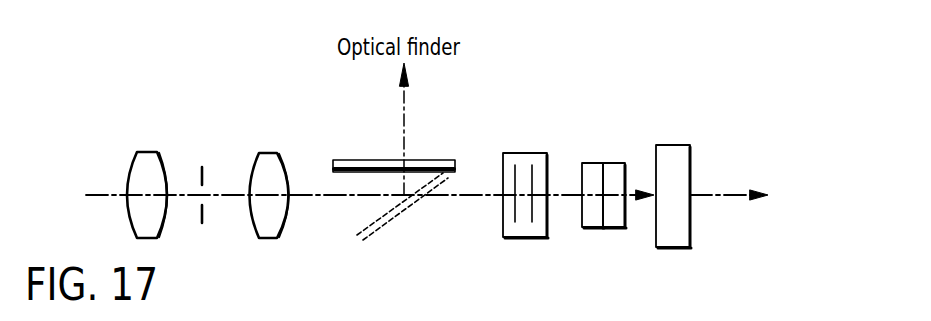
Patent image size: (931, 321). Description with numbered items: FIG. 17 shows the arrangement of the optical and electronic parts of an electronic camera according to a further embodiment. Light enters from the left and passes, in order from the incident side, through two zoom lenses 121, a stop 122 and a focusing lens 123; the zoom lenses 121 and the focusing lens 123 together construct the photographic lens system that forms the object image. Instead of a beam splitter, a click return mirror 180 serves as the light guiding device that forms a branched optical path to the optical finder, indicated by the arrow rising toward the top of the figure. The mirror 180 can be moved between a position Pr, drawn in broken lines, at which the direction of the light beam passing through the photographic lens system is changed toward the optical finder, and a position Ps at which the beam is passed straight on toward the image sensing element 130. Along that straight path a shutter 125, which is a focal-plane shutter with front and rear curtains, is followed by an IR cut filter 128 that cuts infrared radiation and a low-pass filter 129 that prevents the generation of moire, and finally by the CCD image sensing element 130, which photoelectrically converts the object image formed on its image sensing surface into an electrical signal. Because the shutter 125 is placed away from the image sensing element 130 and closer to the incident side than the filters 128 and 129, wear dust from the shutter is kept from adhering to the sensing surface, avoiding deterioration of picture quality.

The zoom lens 121 is at (145, 163).
The stop 122 is at (202, 165).
The focusing lens 123 is at (268, 163).
The click return mirror 180 is at (443, 160).
The position Ps is at (340, 172).
The position Pr is at (417, 200).
The shutter 125 is at (523, 162).
The IR cut filter 128 is at (593, 163).
The low-pass filter 129 is at (615, 163).
The CCD image sensing element 130 is at (672, 152).